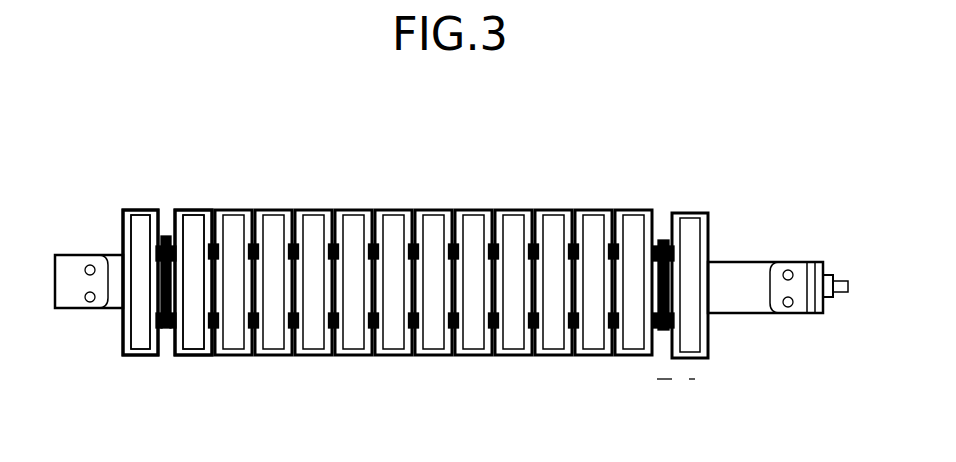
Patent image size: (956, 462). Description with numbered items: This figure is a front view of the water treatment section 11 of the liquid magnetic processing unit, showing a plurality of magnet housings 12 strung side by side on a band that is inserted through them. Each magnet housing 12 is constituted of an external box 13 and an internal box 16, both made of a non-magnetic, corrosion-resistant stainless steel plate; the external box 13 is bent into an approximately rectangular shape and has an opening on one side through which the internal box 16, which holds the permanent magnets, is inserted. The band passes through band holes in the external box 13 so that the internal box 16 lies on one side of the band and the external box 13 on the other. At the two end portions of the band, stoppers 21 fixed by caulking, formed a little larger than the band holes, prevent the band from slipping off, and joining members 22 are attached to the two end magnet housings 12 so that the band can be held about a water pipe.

The water treatment section 11 is at (593, 178).
The magnet housing 12 is at (140, 208).
The external box 13 is at (119, 330).
The internal box 16 is at (140, 337).
The stopper 21 is at (72, 300).
The joining member 22 is at (166, 236).